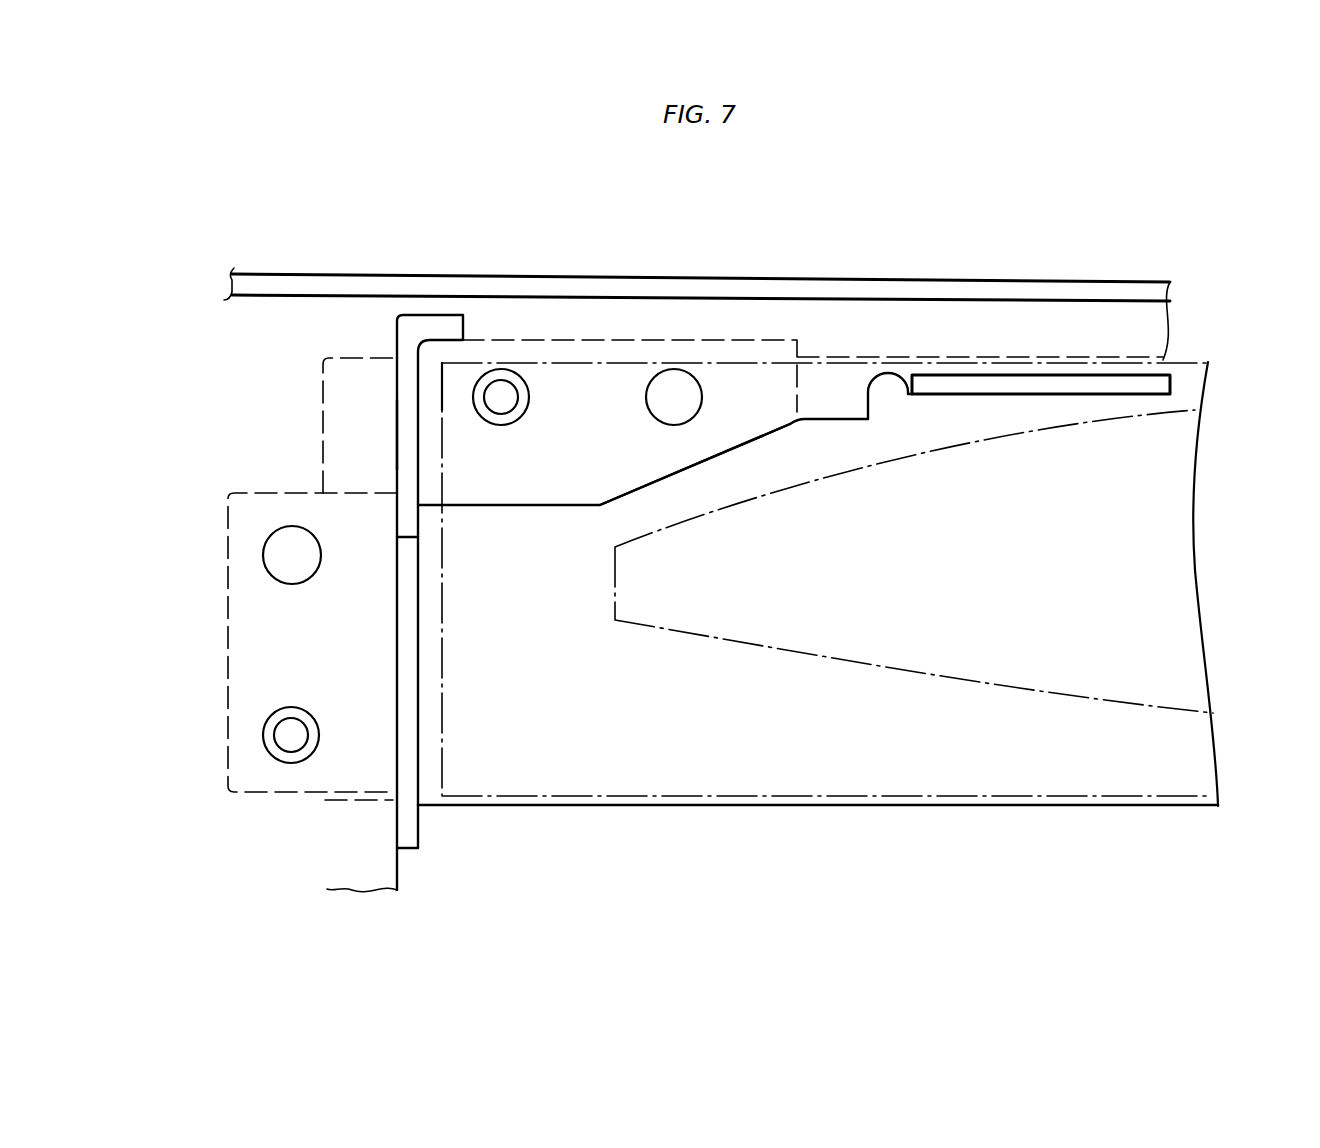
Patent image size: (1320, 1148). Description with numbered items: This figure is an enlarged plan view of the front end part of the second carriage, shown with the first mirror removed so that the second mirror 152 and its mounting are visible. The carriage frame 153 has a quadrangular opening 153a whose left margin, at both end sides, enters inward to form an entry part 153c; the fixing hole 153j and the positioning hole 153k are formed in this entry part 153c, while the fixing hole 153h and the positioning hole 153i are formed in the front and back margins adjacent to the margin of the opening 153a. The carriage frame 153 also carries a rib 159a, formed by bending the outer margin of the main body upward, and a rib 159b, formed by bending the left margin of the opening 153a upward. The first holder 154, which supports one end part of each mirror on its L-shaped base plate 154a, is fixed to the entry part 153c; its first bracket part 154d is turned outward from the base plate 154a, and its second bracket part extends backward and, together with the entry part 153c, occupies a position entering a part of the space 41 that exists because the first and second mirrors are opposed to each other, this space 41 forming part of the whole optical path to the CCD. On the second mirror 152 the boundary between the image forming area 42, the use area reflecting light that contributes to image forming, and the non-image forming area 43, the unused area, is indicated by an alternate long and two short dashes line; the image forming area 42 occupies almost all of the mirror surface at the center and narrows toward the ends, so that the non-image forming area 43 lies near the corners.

The carriage frame 153 is at (714, 540).
The quadrangular opening 153a is at (397, 855).
The entry part 153c is at (585, 387).
The fixing hole 153h is at (283, 765).
The positioning hole 153i is at (264, 540).
The fixing hole 153j is at (517, 365).
The positioning hole 153k is at (690, 368).
The first holder 154 is at (296, 493).
The base plate 154a is at (395, 468).
The first bracket part 154d is at (227, 665).
The rib 159a is at (1155, 293).
The rib 159b is at (1155, 385).
The second mirror 152 is at (620, 802).
The space 41 is at (1147, 800).
The image forming area 42 is at (1200, 543).
The non-image forming area 43 is at (780, 465).